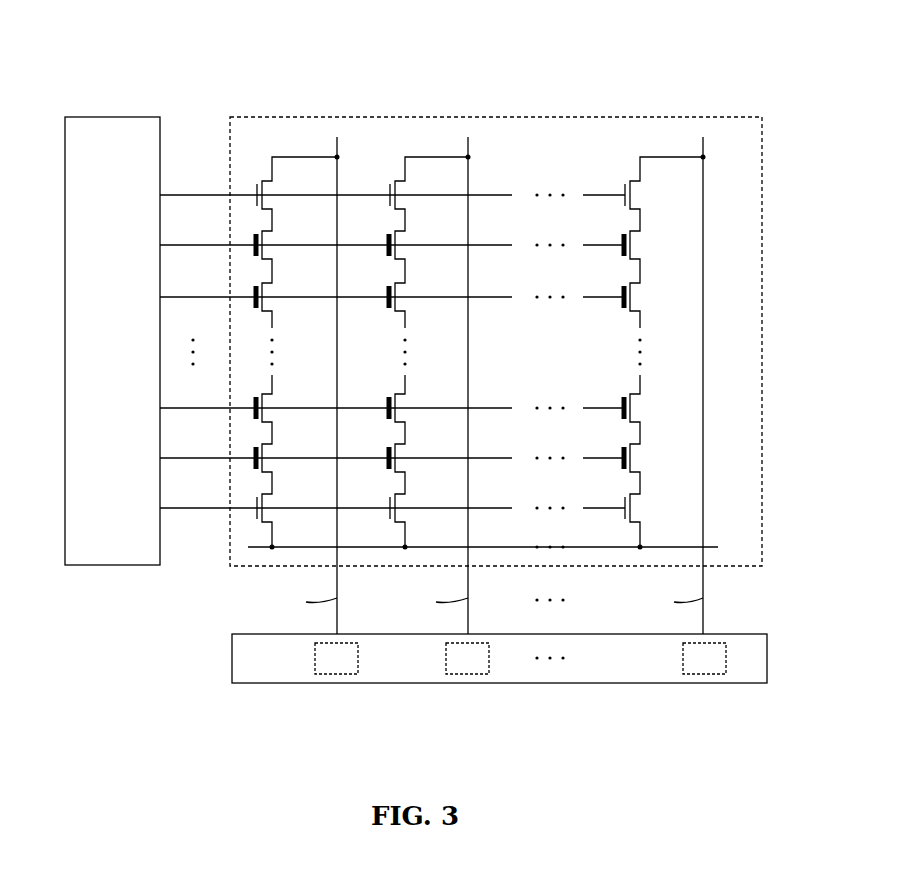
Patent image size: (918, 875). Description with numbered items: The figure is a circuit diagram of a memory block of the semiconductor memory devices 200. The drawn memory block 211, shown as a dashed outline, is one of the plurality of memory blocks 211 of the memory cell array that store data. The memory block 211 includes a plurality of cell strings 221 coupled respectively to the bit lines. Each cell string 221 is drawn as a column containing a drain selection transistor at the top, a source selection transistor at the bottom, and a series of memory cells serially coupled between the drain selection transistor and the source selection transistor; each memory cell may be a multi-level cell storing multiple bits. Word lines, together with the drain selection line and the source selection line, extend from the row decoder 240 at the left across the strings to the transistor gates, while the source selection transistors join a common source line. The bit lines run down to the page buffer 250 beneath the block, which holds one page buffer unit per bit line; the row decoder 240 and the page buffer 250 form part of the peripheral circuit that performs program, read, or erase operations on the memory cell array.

The semiconductor memory devices 200 is at (740, 41).
The memory blocks 211 is at (673, 117).
The cell strings 221 is at (266, 146).
The row decoder 240 is at (113, 117).
The page buffer 250 is at (232, 655).